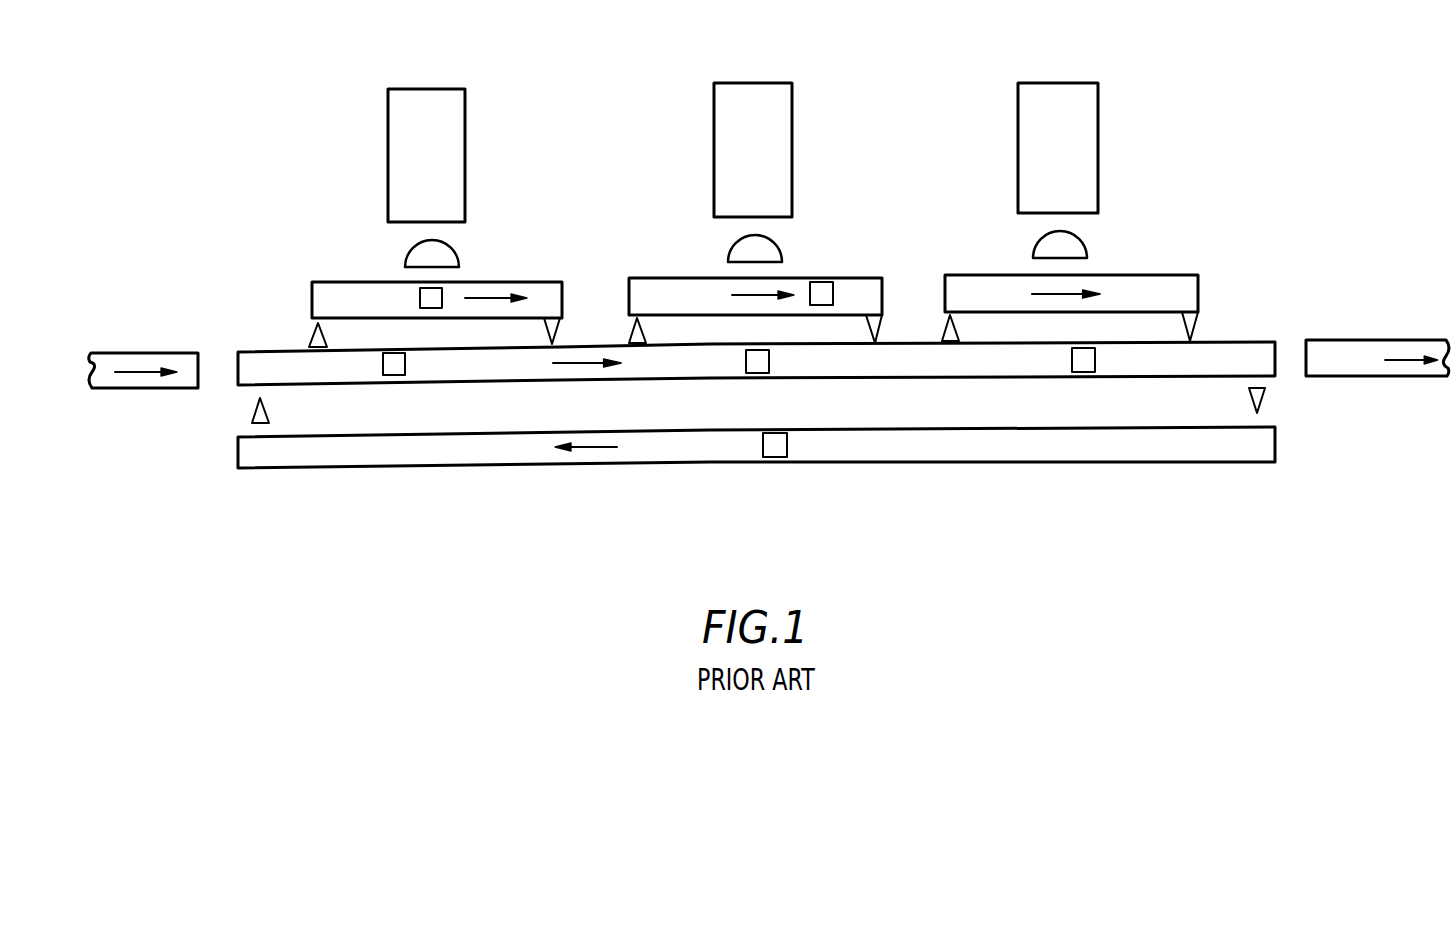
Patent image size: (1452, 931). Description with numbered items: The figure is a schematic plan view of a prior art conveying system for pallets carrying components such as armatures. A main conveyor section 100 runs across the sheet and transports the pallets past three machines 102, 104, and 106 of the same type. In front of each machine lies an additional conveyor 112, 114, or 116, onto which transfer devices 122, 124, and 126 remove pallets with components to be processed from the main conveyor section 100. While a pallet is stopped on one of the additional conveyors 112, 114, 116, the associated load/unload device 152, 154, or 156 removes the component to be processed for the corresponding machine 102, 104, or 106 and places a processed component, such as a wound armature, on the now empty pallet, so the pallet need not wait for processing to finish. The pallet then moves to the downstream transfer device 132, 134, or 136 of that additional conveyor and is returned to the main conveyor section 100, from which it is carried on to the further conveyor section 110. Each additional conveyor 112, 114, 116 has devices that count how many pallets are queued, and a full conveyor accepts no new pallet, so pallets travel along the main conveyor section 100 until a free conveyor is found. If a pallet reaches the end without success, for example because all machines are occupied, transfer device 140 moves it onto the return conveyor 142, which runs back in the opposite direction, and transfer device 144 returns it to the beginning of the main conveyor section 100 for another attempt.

The main conveyor section 100 is at (262, 362).
The machine 102 is at (453, 103).
The machine 104 is at (780, 95).
The machine 106 is at (1086, 95).
The further conveyor section 110 is at (1341, 340).
The additional conveyor 112 is at (544, 281).
The additional conveyor 114 is at (882, 278).
The additional conveyor 116 is at (1180, 275).
The transfer device 122 is at (313, 340).
The transfer device 124 is at (645, 329).
The transfer device 126 is at (958, 328).
The downstream transfer device 132 is at (557, 333).
The downstream transfer device 134 is at (882, 331).
The downstream transfer device 136 is at (1201, 330).
The transfer device 140 is at (1264, 392).
The return conveyor 142 is at (875, 446).
The transfer device 144 is at (268, 408).
The load/unload device 152 is at (453, 250).
The load/unload device 154 is at (778, 246).
The load/unload device 156 is at (1085, 250).